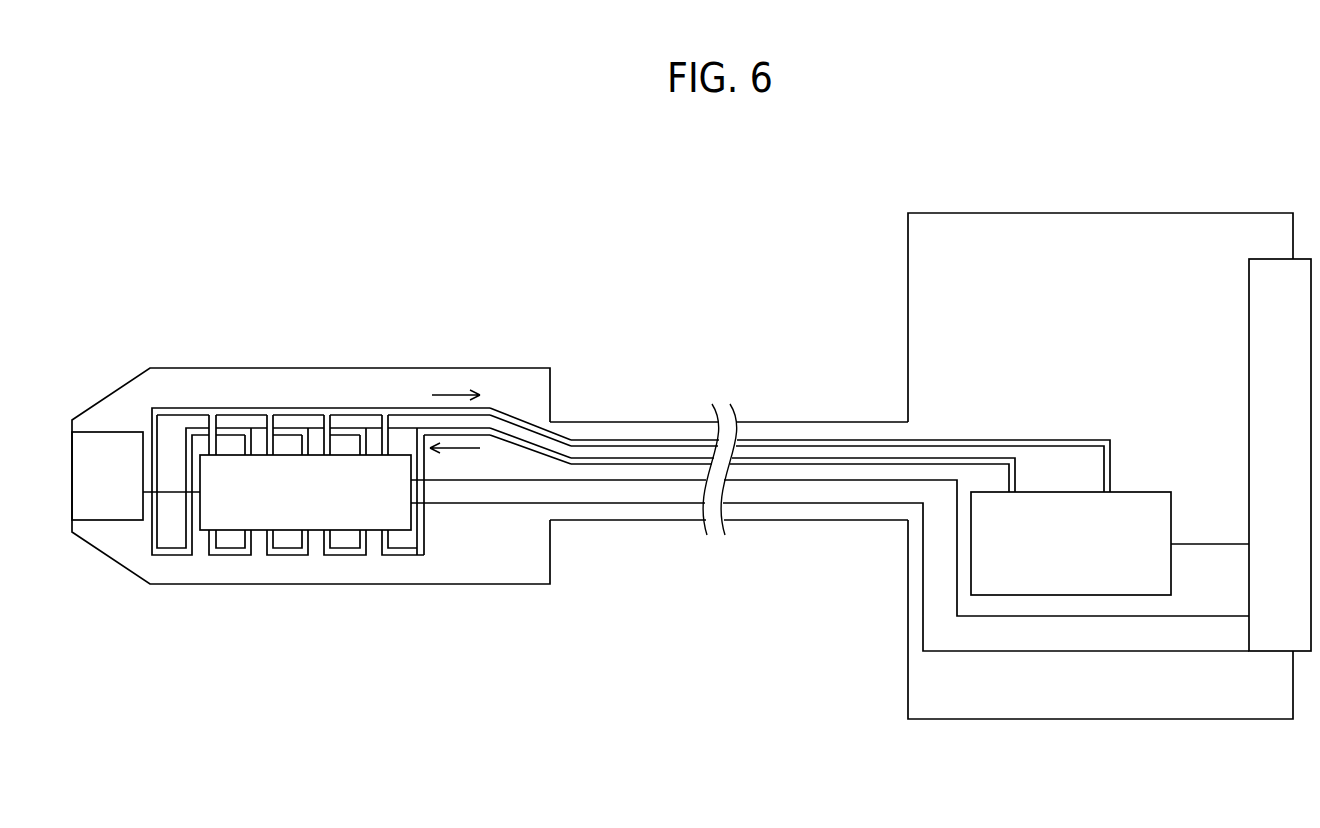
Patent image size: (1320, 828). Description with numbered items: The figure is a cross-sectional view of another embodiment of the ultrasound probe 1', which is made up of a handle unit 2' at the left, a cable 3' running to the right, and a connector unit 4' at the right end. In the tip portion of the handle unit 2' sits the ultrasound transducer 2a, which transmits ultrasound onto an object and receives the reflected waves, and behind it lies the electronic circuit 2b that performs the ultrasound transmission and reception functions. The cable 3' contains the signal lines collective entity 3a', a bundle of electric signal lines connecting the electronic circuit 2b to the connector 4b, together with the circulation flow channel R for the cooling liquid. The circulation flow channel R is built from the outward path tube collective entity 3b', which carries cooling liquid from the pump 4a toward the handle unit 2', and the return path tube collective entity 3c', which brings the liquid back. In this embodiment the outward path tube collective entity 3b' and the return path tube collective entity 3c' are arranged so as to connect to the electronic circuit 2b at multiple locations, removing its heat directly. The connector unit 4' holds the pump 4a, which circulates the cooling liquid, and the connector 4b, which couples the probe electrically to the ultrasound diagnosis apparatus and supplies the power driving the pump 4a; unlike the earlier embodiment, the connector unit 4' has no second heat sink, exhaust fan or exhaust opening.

The ultrasound probe 1' is at (691, 395).
The handle unit 2' is at (321, 486).
The ultrasound transducer 2a is at (113, 508).
The electronic circuit 2b is at (285, 520).
The circulation flow channel R is at (597, 437).
The cable 3' is at (830, 493).
The signal lines collective entity 3a' is at (830, 565).
The outward path tube collective entity 3b' is at (793, 414).
The return path tube collective entity 3c' is at (840, 414).
The connector unit 4' is at (1109, 437).
The pump 4a is at (1150, 500).
The connector 4b is at (1256, 313).